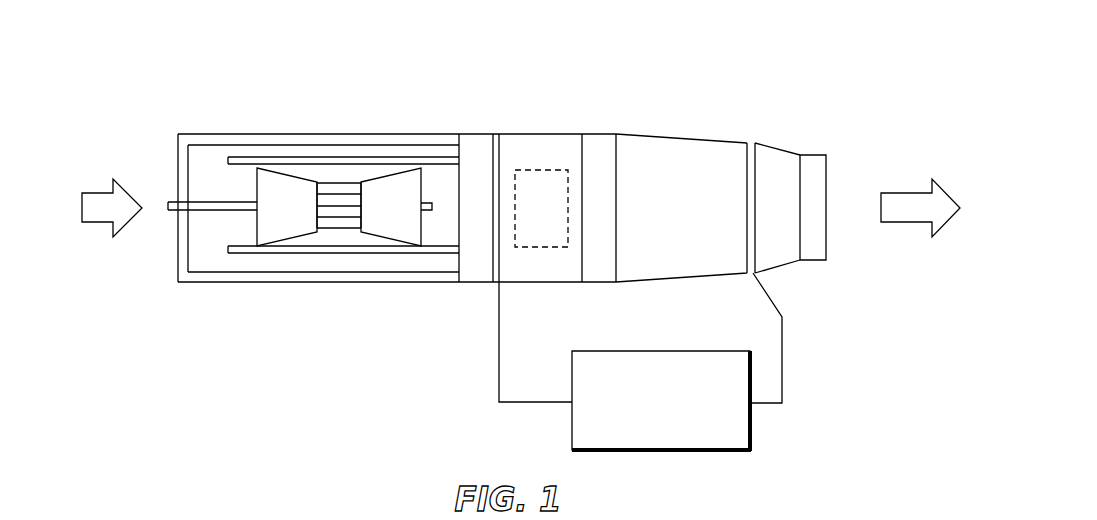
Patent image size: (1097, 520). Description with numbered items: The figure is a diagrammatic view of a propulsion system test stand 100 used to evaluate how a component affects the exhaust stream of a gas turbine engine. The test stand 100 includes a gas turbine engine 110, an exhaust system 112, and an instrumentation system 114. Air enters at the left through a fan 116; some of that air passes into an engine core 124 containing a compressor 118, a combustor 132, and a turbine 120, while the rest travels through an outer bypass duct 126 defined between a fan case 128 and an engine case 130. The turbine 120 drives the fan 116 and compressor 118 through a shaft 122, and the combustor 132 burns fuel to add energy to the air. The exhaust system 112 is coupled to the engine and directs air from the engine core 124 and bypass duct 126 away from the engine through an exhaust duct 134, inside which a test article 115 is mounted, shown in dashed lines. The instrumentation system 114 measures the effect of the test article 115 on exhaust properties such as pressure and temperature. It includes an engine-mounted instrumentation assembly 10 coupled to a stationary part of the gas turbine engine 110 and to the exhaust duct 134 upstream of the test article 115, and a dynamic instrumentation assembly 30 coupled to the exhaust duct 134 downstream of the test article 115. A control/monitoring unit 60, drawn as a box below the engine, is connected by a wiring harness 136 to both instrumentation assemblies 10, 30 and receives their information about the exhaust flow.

The propulsion system test stand 100 is at (843, 77).
The gas turbine engine 110 is at (250, 290).
The outer bypass duct 126 is at (212, 141).
The fan 116 is at (173, 242).
The shaft 122 is at (160, 195).
The fan case 128 is at (297, 141).
The engine case 130 is at (322, 254).
The compressor 118 is at (257, 185).
The engine core 124 is at (245, 226).
The combustor 132 is at (342, 183).
The turbine 120 is at (395, 195).
The engine-mounted instrumentation assembly 10 is at (480, 290).
The exhaust system 112 is at (678, 135).
The exhaust duct 134 is at (635, 135).
The test article 115 is at (548, 210).
The instrumentation system 114 is at (745, 280).
The dynamic instrumentation assembly 30 is at (757, 250).
The wiring harness 136 is at (490, 368).
The control/monitoring unit 60 is at (755, 425).